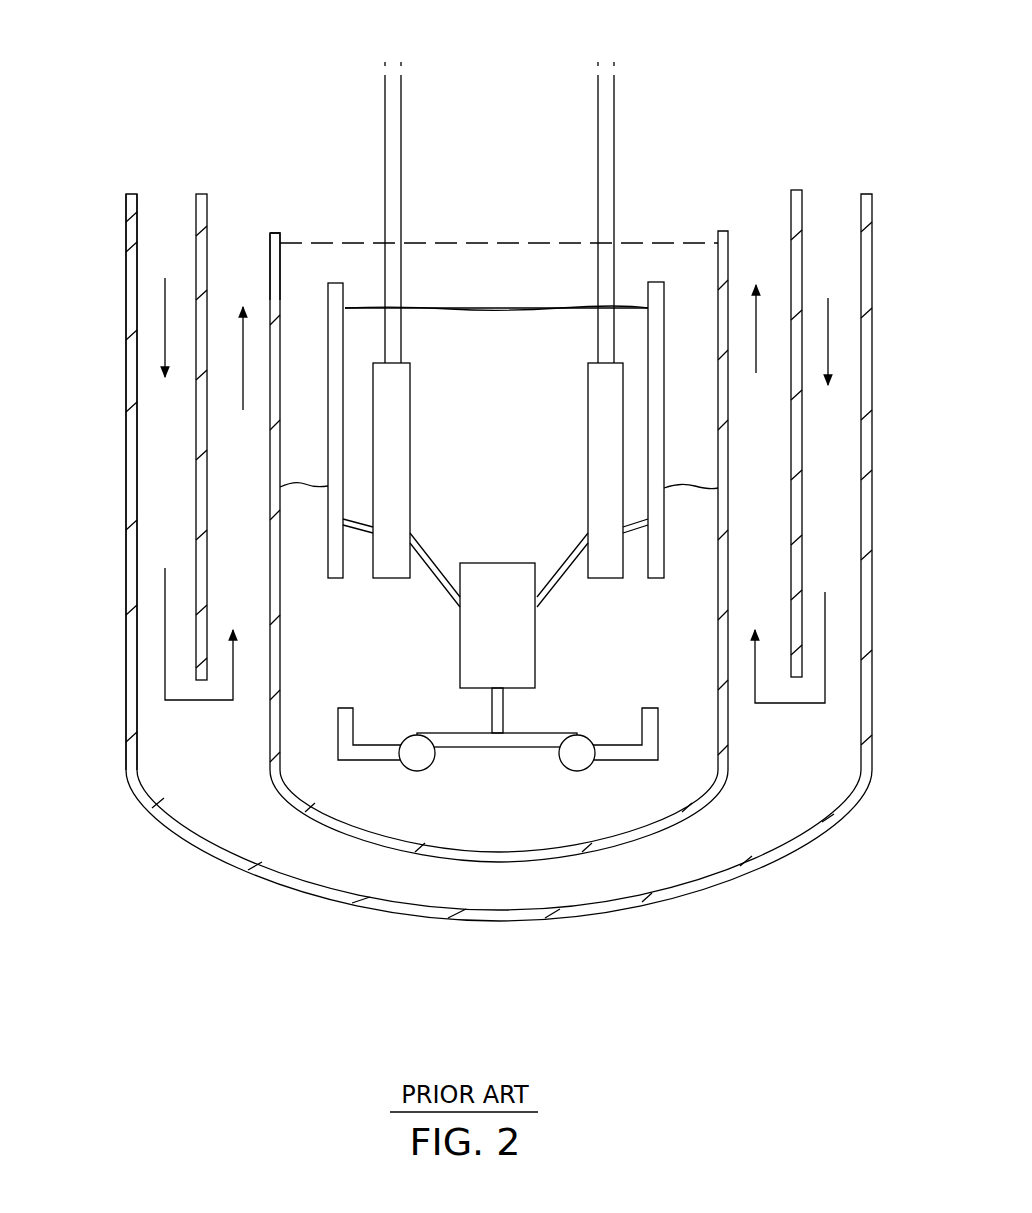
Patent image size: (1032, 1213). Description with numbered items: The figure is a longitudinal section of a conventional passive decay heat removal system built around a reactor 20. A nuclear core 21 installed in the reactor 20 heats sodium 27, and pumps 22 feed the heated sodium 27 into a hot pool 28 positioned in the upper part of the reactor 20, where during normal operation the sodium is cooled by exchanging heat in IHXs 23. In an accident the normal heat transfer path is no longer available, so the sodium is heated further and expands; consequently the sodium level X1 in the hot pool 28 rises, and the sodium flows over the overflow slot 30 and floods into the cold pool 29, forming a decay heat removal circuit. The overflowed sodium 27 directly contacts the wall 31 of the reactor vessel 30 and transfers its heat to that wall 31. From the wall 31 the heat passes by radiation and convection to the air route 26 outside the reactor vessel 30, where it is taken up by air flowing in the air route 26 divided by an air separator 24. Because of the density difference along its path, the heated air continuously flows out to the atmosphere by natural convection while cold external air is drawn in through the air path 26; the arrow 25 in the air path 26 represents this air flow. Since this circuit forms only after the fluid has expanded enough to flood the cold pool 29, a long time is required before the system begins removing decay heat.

The reactor 20 is at (263, 42).
The nuclear core 21 is at (515, 675).
The pumps 22 is at (413, 758).
The IHXs 23 is at (585, 368).
The air separator 24 is at (200, 497).
The arrow 25 is at (162, 323).
The air route 26 is at (188, 172).
The sodium 27 is at (360, 505).
The hot pool 28 is at (483, 338).
The cold pool 29 is at (678, 742).
The reactor vessel 30 is at (338, 290).
The wall 31 is at (281, 243).
The sodium level X1 is at (645, 310).